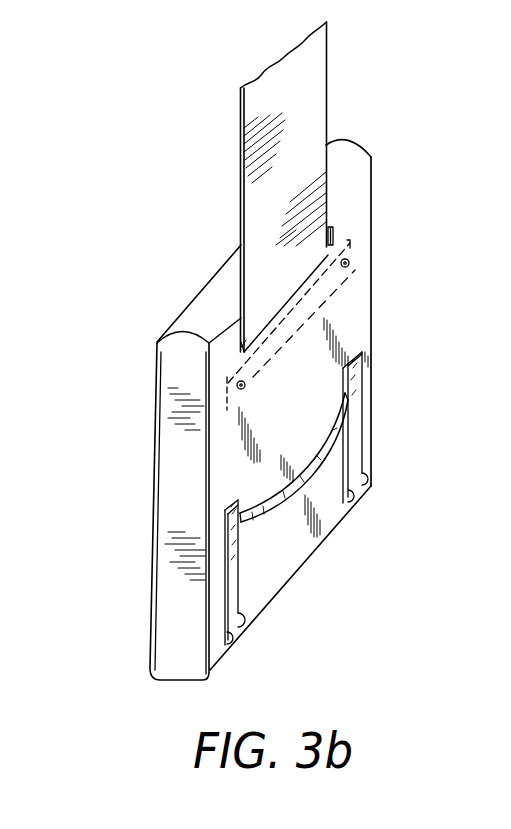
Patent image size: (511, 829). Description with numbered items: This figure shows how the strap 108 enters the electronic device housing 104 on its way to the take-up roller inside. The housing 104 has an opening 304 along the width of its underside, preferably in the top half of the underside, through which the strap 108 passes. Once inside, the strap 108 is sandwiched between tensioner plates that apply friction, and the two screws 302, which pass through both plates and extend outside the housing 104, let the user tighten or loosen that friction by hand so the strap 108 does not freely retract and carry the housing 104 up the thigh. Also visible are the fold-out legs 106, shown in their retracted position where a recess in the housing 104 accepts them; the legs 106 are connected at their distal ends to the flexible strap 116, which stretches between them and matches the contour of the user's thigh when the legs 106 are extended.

The housing 104 is at (163, 668).
The fold-out legs 106 is at (362, 420).
The strap 108 is at (320, 92).
The flexible strap 116 is at (302, 468).
The screws 302 is at (243, 383).
The opening 304 is at (333, 230).